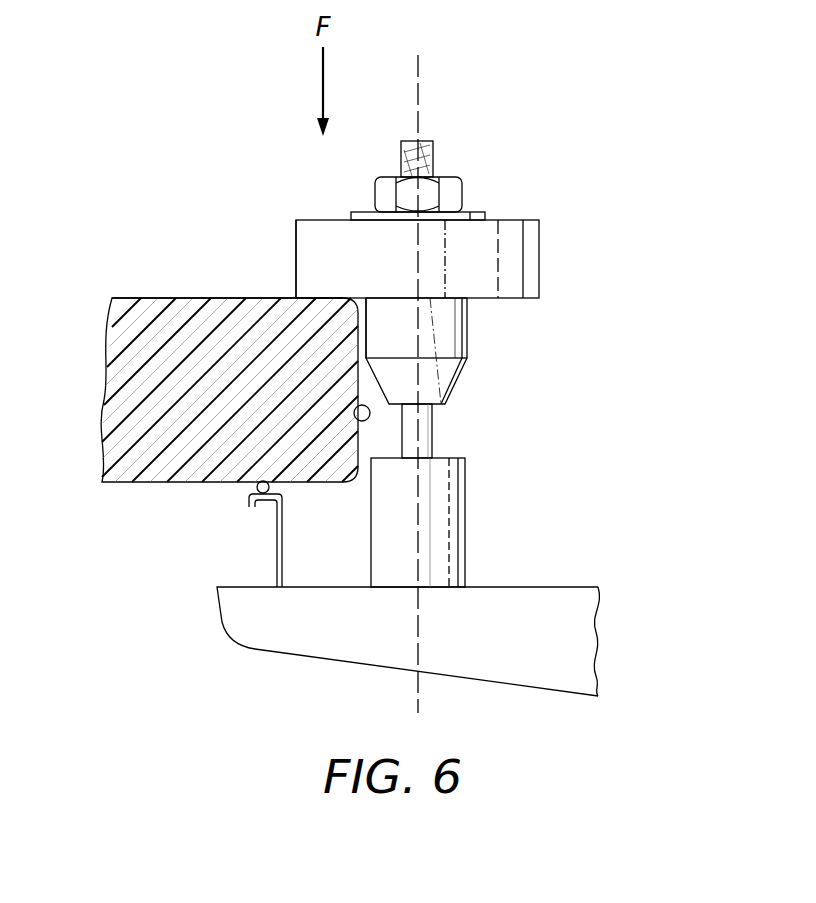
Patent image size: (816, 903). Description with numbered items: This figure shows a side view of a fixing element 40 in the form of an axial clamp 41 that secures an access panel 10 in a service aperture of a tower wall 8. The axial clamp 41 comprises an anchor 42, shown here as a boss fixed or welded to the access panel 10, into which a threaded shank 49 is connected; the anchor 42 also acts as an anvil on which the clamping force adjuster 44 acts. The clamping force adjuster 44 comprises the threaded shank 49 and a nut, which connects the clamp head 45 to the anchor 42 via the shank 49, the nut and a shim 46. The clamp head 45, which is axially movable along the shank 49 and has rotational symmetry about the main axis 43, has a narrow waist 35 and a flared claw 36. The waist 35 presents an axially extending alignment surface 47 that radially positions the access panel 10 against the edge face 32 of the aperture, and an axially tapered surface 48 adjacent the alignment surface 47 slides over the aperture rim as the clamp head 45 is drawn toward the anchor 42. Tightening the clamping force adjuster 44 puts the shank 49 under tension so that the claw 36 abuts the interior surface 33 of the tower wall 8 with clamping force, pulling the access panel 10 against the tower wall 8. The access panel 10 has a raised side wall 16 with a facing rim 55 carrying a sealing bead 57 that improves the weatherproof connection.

The tower wall 8 is at (108, 340).
The access panel 10 is at (614, 680).
The side wall 16 is at (283, 557).
The edge face 32 is at (354, 411).
The interior surface 33 is at (147, 290).
The waist 35 is at (388, 312).
The claw 36 is at (308, 240).
The fixing element 40 is at (648, 527).
The axial clamp 41 is at (440, 268).
The anchor 42 is at (460, 545).
The main axis 43 is at (418, 70).
The clamping force adjuster 44 is at (376, 190).
The clamp head 45 is at (531, 243).
The shim 46 is at (476, 212).
The alignment surface 47 is at (456, 318).
The tapered surface 48 is at (458, 381).
The shank 49 is at (432, 438).
The facing rim 55 is at (261, 508).
The sealing bead 57 is at (257, 490).